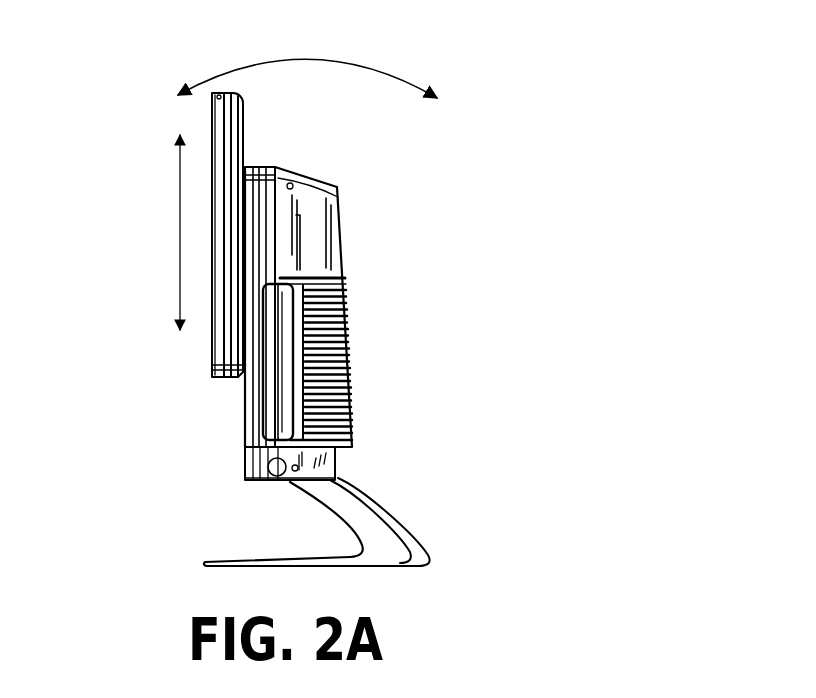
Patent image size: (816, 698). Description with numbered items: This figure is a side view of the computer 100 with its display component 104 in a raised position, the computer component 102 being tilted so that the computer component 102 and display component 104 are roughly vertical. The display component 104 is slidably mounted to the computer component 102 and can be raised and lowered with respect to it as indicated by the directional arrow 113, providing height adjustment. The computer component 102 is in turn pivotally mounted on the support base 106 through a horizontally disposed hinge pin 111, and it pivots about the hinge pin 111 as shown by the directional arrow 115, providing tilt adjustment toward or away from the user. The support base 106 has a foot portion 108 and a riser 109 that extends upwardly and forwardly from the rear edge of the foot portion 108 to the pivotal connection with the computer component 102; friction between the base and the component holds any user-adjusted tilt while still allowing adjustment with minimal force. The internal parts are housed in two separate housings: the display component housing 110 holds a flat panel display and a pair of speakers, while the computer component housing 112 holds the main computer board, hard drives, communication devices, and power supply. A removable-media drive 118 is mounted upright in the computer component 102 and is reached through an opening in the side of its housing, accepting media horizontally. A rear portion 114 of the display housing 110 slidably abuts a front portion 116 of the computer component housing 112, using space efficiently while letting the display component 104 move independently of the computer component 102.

The computer 100 is at (575, 154).
The computer component 102 is at (335, 273).
The display component 104 is at (205, 338).
The support base 106 is at (368, 522).
The foot portion 108 is at (212, 562).
The riser 109 is at (336, 482).
The display component housing 110 is at (212, 100).
The hinge pin 111 is at (258, 480).
The computer component housing 112 is at (338, 228).
The directional arrow 113 is at (180, 185).
The rear portion 114 is at (245, 166).
The directional arrow 115 is at (390, 62).
The front portion 116 is at (247, 435).
The removable-media drive 118 is at (250, 387).